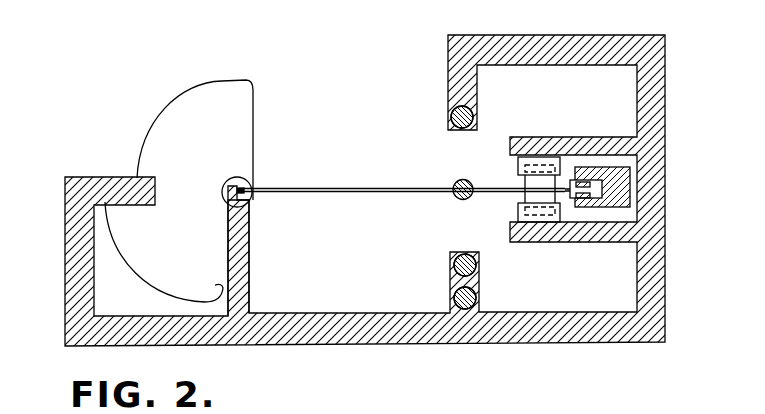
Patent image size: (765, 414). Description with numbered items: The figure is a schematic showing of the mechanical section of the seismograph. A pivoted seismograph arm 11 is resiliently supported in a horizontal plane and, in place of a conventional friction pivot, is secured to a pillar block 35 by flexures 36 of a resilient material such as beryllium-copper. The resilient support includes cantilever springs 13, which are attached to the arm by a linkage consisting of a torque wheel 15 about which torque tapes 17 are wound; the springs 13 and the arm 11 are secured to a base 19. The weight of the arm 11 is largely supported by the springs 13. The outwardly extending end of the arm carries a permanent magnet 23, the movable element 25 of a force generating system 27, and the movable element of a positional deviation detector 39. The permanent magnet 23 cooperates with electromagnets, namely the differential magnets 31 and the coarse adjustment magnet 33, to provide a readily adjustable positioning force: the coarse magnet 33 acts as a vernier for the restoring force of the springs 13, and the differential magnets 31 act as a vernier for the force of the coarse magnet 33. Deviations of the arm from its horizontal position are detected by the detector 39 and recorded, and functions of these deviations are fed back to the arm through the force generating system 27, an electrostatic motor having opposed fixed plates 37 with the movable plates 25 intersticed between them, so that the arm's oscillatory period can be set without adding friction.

The seismograph arm 11 is at (365, 187).
The cantilever springs 13 is at (197, 83).
The torque wheel 15 is at (232, 172).
The torque tapes 17 is at (255, 136).
The base 19 is at (365, 206).
The permanent magnet 23 is at (477, 168).
The movable element 25 is at (525, 182).
The force generating system 27 is at (571, 127).
The differential magnets 31 is at (473, 118).
The coarse adjustment magnet 33 is at (477, 299).
The pillar block 35 is at (243, 246).
The flexures 36 is at (240, 190).
The fixed plates 37 is at (518, 162).
The positional deviation detector 39 is at (630, 193).